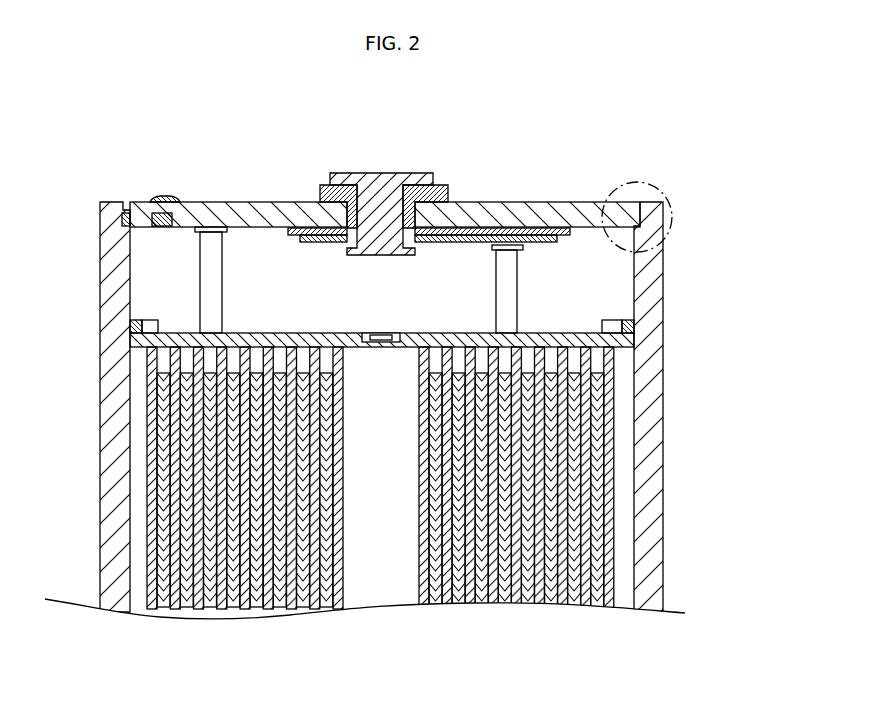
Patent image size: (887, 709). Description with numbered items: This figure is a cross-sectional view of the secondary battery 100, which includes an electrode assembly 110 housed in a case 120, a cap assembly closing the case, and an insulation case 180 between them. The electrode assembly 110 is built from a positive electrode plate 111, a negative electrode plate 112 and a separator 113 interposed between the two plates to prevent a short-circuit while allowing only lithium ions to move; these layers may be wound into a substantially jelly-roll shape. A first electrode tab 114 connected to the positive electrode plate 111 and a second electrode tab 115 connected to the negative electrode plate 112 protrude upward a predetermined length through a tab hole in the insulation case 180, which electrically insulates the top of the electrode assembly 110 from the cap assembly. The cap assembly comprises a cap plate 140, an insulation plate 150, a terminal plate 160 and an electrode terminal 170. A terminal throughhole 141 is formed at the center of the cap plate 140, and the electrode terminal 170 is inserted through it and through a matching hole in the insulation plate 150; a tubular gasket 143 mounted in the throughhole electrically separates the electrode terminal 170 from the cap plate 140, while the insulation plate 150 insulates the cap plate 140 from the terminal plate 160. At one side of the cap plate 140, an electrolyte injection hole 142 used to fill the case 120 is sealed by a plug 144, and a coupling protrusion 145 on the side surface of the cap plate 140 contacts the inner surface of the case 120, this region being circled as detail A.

The secondary battery 100 is at (716, 134).
The electrode assembly 110 is at (630, 413).
The positive electrode plate 111 is at (608, 605).
The negative electrode plate 112 is at (573, 605).
The separator 113 is at (596, 605).
The first electrode tab 114 is at (210, 273).
The second electrode tab 115 is at (510, 298).
The case 120 is at (653, 511).
The cap plate 140 is at (573, 202).
The terminal throughhole 141 is at (313, 217).
The electrolyte injection hole 142 is at (156, 205).
The gasket 143 is at (320, 185).
The plug 144 is at (167, 196).
The coupling protrusion 145 is at (102, 217).
The insulation plate 150 is at (538, 222).
The terminal plate 160 is at (467, 220).
The electrode terminal 170 is at (380, 188).
The insulation case 180 is at (630, 342).
The detail region A is at (670, 200).